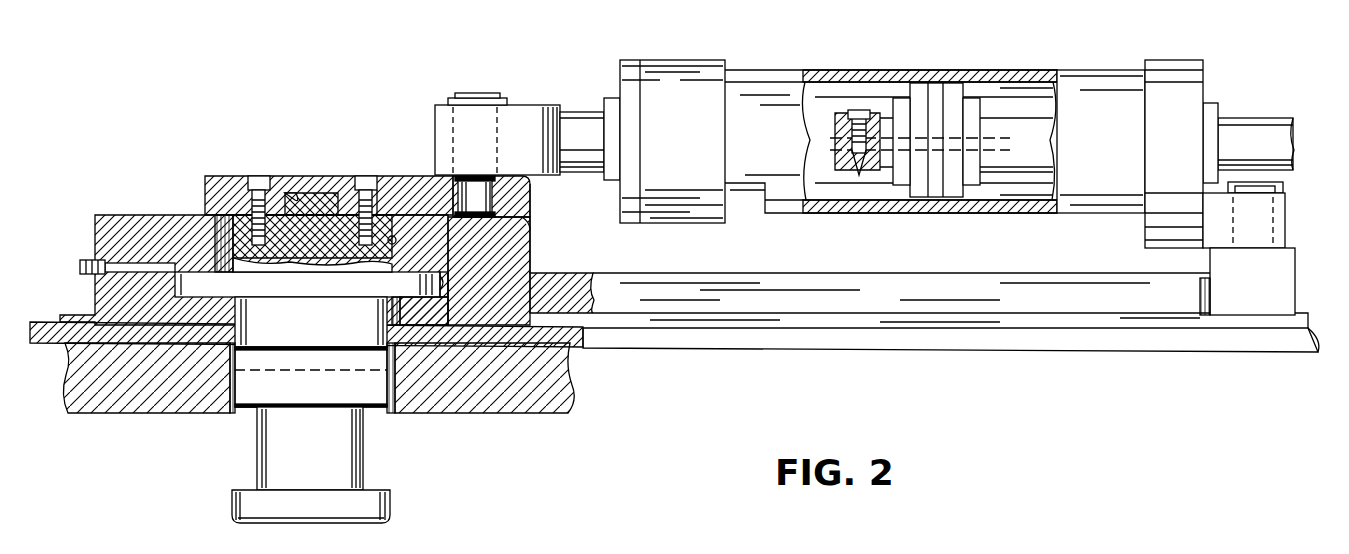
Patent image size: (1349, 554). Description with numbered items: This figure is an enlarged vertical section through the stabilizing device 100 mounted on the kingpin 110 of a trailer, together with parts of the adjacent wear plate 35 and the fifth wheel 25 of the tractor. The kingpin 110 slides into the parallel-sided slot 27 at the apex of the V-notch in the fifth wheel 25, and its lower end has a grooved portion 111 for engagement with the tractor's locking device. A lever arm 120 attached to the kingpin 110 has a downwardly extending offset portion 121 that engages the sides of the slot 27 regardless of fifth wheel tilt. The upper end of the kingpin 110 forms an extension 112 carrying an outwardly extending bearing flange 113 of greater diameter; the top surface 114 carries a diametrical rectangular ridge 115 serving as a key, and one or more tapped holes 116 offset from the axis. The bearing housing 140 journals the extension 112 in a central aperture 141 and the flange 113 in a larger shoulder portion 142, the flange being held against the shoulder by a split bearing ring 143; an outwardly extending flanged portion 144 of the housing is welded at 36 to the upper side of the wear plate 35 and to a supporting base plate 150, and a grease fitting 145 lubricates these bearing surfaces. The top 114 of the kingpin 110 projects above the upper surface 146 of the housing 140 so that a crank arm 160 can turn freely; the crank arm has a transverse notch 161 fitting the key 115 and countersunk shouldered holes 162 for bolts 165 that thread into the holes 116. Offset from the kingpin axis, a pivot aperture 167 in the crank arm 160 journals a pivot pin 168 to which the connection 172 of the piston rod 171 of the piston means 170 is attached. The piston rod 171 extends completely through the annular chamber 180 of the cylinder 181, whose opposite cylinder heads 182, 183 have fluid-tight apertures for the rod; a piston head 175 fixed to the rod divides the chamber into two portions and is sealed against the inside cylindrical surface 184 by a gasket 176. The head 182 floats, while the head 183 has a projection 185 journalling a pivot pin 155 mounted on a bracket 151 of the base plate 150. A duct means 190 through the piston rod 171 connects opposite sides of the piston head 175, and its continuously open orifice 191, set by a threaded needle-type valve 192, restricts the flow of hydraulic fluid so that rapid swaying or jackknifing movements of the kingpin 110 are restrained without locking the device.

The fifth wheel assembly 25 is at (507, 418).
The slot 27 is at (235, 370).
The wear plate 35 is at (595, 342).
The welds 36 is at (60, 322).
The stabilizing device 100 is at (855, 58).
The kingpin 110 is at (238, 510).
The grooved portion 111 is at (326, 459).
The extension 112 is at (322, 324).
The bearing flange 113 is at (324, 296).
The top surface 114 is at (376, 218).
The rectangular ridge 115 is at (325, 195).
The tapped holes 116 is at (355, 229).
The lever arm 120 is at (248, 409).
The offset portion 121 is at (326, 398).
The bearing housing 140 is at (532, 261).
The central aperture 141 is at (397, 240).
The shoulder portion 142 is at (447, 286).
The split bearing ring 143 is at (440, 310).
The flanged portion 144 is at (75, 316).
The grease fitting 145 is at (92, 258).
The upper surface 146 is at (532, 232).
The base plate 150 is at (733, 318).
The bracket 151 is at (1278, 285).
The pivot pin 155 is at (1265, 184).
The crank arm 160 is at (458, 165).
The transverse notch 161 is at (297, 192).
The countersunk shouldered holes 162 is at (245, 176).
The bolts 165 is at (259, 176).
The pivot aperture 167 is at (462, 196).
The pivot pin 168 is at (477, 93).
The piston means 170 is at (582, 108).
The piston rod 171 is at (590, 160).
The connection 172 is at (548, 70).
The piston head 175 is at (965, 98).
The gasket 176 is at (938, 85).
The annular chamber 180 is at (1020, 88).
The cylinder 181 is at (1125, 80).
The cylinder head 182 is at (685, 75).
The cylinder head 183 is at (1195, 80).
The inside cylindrical surface 184 is at (1050, 92).
The projection 185 is at (1280, 233).
The duct means 190 is at (1020, 133).
The orifice 191 is at (860, 155).
The needle-type valve 192 is at (835, 136).